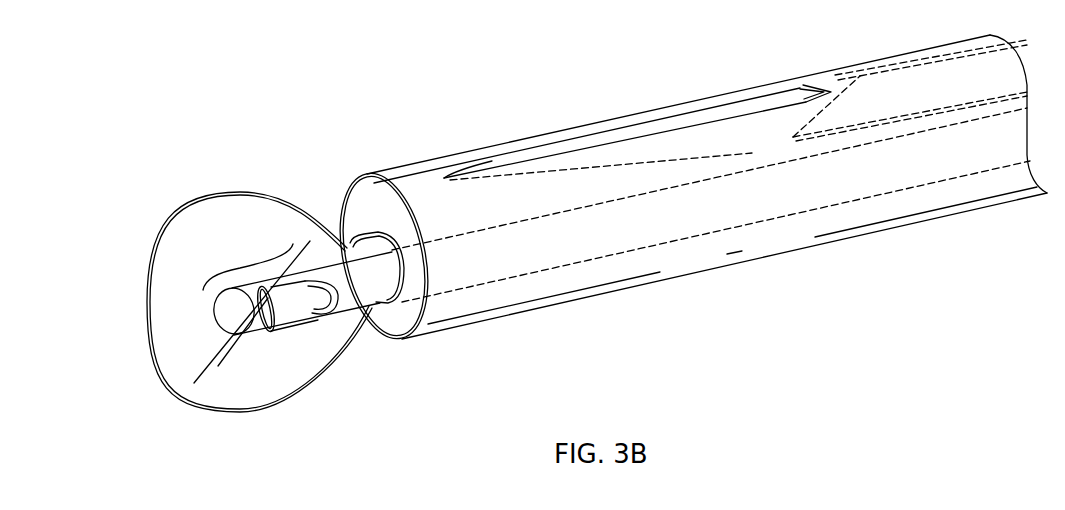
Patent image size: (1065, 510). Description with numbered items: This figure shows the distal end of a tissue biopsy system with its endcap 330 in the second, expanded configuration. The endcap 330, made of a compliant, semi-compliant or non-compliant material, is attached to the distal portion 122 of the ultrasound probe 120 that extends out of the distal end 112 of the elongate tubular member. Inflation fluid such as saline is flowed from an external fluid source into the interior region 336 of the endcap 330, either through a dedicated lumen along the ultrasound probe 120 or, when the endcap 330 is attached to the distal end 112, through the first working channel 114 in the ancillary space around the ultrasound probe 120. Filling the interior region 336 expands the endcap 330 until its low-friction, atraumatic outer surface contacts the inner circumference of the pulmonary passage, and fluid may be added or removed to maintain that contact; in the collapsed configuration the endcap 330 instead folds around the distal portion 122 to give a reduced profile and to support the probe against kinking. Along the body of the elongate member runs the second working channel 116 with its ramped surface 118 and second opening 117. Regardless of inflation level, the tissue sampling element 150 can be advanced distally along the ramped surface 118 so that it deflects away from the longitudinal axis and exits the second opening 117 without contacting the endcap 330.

The distal end 112 is at (403, 318).
The first working channel 114 is at (930, 185).
The second working channel 116 is at (918, 54).
The second opening 117 is at (588, 140).
The ramped surface 118 is at (742, 152).
The ultrasound probe 120 is at (370, 288).
The distal portion 122 is at (293, 244).
The tissue sampling element 150 is at (868, 108).
The endcap 330 is at (217, 403).
The interior region 336 is at (184, 225).